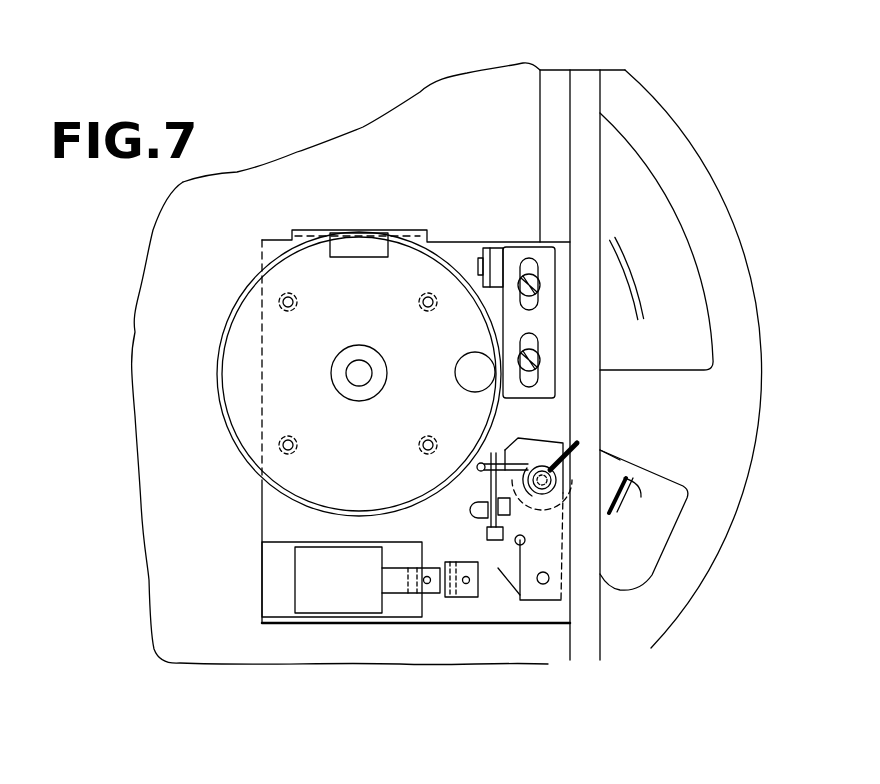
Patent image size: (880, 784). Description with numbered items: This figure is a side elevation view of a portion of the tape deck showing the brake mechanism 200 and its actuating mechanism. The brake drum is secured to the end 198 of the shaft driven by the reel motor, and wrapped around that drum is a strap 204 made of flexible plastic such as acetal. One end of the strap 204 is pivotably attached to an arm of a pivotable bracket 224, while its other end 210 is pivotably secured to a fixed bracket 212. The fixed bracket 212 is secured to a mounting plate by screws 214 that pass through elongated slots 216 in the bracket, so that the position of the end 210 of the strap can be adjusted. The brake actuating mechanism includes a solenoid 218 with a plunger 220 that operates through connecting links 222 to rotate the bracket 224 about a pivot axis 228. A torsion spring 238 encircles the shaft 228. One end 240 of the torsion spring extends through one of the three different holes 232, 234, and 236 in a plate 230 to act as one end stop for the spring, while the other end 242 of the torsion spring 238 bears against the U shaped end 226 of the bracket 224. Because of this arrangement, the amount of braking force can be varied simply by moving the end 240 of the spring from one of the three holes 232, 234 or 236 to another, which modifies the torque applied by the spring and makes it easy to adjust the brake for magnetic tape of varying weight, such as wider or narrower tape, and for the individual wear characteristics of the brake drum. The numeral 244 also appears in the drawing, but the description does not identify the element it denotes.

The end of the shaft 198 is at (362, 362).
The brake mechanism 200 is at (262, 231).
The strap 204 is at (500, 417).
The other end of the strap 210 is at (497, 247).
The fixed bracket 212 is at (527, 245).
The screws 214 is at (540, 288).
The elongated slots 216 is at (538, 268).
The solenoid 218 is at (298, 582).
The plunger 220 is at (400, 593).
The connecting links 222 is at (458, 600).
The pivotable bracket 224 is at (567, 588).
The U shaped end of the bracket 226 is at (550, 438).
The pivot axis 228 is at (565, 470).
The plate 230 is at (275, 518).
The hole 232 is at (477, 468).
The hole 234 is at (470, 503).
The hole 236 is at (515, 545).
The torsion spring 238 is at (635, 501).
The one end of the torsion spring 240 is at (492, 458).
The other end of the torsion spring 242 is at (580, 450).
The latch arm 244 is at (560, 548).